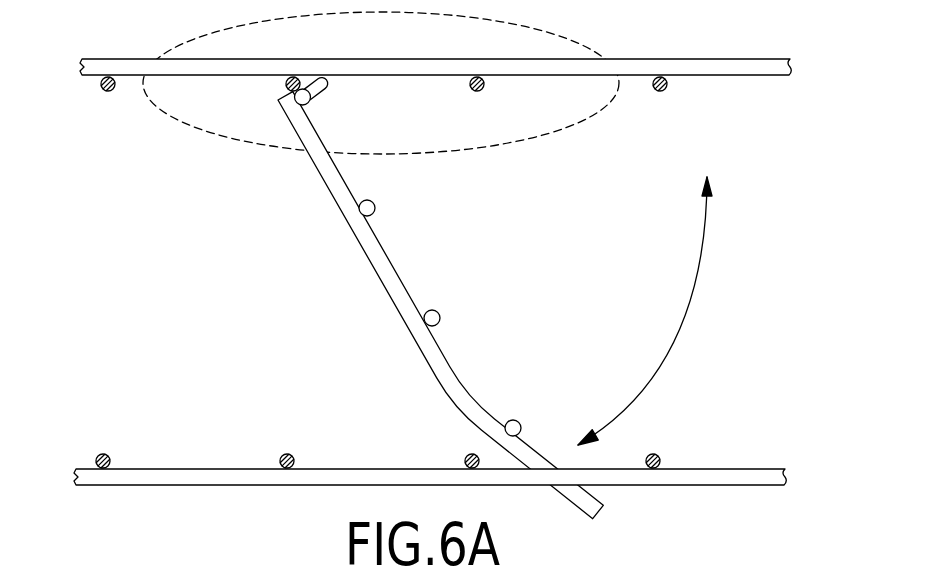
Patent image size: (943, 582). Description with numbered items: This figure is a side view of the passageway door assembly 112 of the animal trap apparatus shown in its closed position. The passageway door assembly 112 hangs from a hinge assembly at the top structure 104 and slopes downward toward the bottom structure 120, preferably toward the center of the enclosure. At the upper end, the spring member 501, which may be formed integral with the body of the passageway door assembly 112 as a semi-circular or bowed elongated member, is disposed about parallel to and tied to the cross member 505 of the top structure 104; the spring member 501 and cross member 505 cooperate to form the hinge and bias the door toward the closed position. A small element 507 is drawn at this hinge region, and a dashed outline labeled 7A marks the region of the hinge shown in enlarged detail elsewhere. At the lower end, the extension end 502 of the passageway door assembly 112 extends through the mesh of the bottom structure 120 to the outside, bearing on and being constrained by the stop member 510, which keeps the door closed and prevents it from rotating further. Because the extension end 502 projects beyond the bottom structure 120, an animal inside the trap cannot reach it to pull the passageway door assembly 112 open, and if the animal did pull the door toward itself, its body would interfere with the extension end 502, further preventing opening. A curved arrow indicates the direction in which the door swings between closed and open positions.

The top structure 104 is at (118, 58).
The bottom structure 120 is at (232, 486).
The passageway door assembly 112 is at (364, 255).
The spring member 501 is at (311, 104).
The cross member 505 is at (284, 81).
The bushing 507 is at (333, 77).
The stop member 510 is at (462, 455).
The extension end 502 is at (604, 515).
The detail region shown in FIG. 7A is at (232, 142).